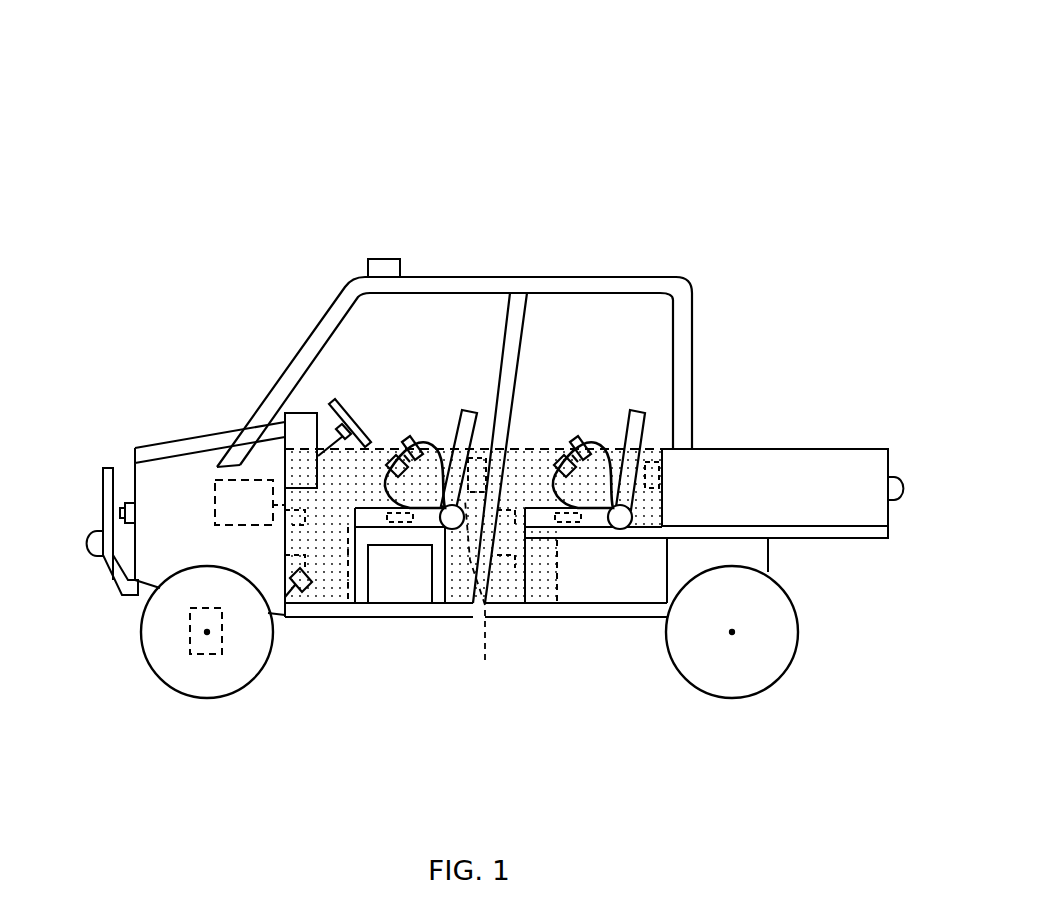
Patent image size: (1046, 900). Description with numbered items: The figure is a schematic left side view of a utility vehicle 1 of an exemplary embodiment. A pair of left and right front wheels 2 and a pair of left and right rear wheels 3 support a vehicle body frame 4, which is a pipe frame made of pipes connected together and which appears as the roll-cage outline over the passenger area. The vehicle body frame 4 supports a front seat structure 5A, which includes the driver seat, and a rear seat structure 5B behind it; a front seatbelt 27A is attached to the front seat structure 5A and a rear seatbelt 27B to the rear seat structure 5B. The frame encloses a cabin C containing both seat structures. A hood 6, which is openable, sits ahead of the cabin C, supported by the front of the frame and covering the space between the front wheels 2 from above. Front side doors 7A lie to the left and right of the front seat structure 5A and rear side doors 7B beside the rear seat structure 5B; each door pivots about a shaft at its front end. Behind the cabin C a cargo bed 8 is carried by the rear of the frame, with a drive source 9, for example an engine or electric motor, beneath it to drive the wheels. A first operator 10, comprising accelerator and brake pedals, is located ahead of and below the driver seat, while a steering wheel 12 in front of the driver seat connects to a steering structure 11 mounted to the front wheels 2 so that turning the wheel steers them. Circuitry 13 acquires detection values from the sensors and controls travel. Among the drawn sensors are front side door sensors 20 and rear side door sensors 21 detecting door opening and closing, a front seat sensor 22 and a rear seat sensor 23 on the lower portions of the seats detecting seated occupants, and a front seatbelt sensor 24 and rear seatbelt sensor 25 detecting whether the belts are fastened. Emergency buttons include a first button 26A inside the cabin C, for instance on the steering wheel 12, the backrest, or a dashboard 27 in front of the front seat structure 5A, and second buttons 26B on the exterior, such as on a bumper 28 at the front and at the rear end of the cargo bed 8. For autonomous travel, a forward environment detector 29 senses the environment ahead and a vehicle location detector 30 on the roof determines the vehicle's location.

The utility vehicle 1 is at (577, 96).
The front wheels 2 is at (245, 668).
The rear wheels 3 is at (765, 668).
The vehicle body frame 4 is at (690, 326).
The front seat structure 5A is at (435, 530).
The rear seat structure 5B is at (597, 520).
The hood 6 is at (177, 447).
The front side doors 7A is at (334, 595).
The rear side doors 7B is at (515, 597).
The cargo bed 8 is at (786, 465).
The drive source 9 is at (753, 555).
The first operator 10 is at (298, 602).
The steering structure 11 is at (190, 640).
The steering wheel 12 is at (340, 425).
The circuitry 13 is at (214, 506).
The front side door sensors 20 is at (482, 596).
The rear side door sensors 21 is at (648, 490).
The front seat sensor 22 is at (398, 525).
The rear seat sensor 23 is at (563, 527).
The front seatbelt sensor 24 is at (383, 450).
The rear seatbelt sensor 25 is at (558, 448).
The first button 26A is at (370, 452).
The second buttons 26B is at (96, 546).
The dashboard 27 is at (303, 425).
The front seatbelt 27A is at (445, 428).
The rear seatbelt 27B is at (600, 447).
The bumper 28 is at (105, 470).
The forward environment detector 29 is at (126, 502).
The vehicle location detector 30 is at (387, 258).
The cabin C is at (575, 318).